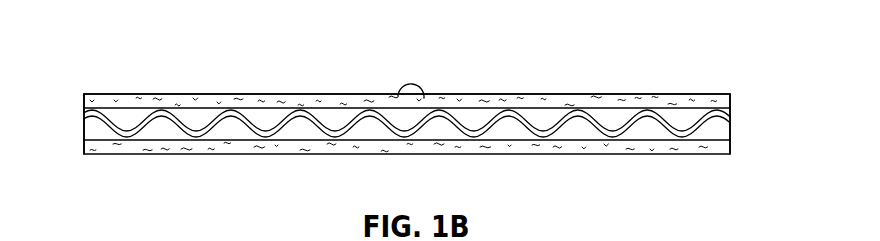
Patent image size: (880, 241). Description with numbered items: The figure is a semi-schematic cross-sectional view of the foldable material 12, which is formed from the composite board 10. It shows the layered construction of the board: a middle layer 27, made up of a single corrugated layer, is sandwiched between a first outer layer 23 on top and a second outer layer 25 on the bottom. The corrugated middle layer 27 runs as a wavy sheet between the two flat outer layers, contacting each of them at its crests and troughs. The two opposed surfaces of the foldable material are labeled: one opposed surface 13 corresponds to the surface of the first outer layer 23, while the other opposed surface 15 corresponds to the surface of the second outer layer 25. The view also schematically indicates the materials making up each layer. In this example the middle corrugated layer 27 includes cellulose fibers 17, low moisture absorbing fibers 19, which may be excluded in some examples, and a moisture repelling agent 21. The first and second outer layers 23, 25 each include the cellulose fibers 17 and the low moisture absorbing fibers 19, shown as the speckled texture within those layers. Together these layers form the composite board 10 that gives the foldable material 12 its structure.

The composite board 10 is at (411, 111).
The foldable material 12 is at (407, 124).
The opposed surface 13 is at (424, 98).
The opposed surface 15 is at (162, 152).
The cellulose fibers 17 is at (208, 100).
The low moisture absorbing fibers 19 is at (353, 103).
The moisture repelling agent 21 is at (337, 140).
The first outer layer 23 is at (736, 98).
The second outer layer 25 is at (78, 147).
The middle layer 27 is at (724, 123).